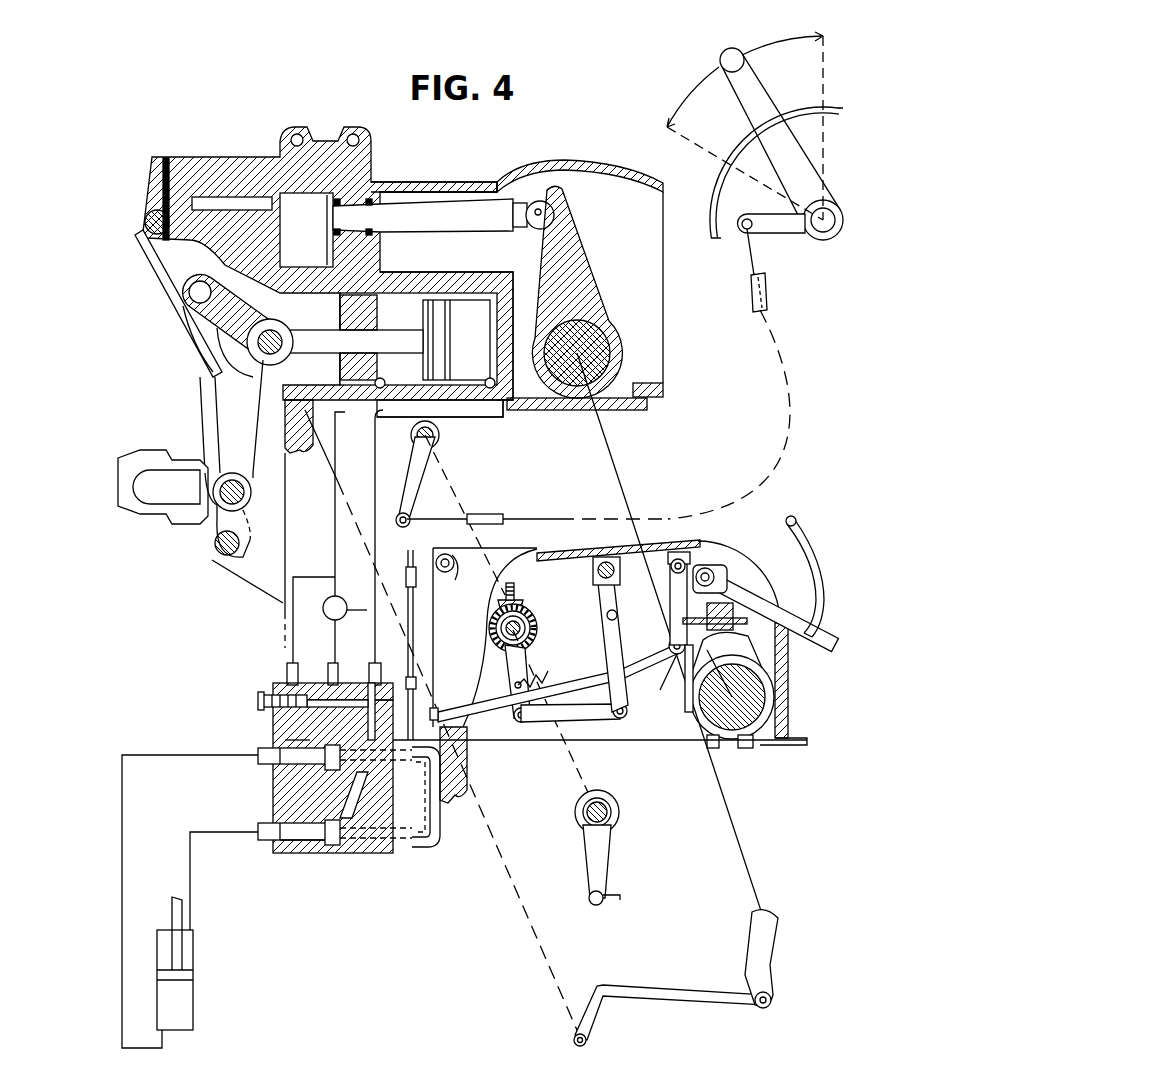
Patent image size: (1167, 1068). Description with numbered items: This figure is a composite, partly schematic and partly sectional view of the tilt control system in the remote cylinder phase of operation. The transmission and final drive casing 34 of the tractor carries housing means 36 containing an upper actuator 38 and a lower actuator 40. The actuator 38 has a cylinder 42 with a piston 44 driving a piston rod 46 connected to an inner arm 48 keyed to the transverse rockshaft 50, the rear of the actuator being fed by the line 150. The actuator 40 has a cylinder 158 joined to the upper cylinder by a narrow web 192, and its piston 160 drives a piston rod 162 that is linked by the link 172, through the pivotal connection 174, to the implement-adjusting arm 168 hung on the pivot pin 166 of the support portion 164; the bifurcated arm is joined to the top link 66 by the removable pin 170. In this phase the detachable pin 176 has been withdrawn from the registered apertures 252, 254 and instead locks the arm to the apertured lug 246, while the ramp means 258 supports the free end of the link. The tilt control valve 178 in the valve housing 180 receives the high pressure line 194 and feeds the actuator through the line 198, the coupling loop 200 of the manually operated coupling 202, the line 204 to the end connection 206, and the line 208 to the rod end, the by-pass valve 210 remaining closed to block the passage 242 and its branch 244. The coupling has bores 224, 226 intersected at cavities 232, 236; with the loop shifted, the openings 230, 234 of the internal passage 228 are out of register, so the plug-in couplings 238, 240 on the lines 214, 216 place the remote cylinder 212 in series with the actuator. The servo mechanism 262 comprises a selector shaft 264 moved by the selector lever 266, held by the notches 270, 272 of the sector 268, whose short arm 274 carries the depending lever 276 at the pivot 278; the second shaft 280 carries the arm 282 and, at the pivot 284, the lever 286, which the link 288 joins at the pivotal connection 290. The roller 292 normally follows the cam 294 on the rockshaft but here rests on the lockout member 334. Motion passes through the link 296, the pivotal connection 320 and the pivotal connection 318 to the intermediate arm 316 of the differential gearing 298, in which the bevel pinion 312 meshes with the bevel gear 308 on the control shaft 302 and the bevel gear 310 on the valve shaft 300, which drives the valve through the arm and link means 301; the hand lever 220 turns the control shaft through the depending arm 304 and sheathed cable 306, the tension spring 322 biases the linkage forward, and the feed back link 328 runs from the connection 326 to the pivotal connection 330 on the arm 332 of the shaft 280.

The transmission and final drive casing 34 is at (663, 391).
The housing means 36 is at (643, 181).
The first power-operated fluid-pressure actuator 38 is at (503, 261).
The second power-operated fluid-pressure actuator 40 is at (470, 392).
The cylinder 42 is at (428, 182).
The piston 44 is at (345, 228).
The piston rod 46 is at (460, 236).
The inner arm 48 is at (585, 260).
The rockshaft 50 is at (592, 340).
The top link 66 is at (125, 472).
The line 150 is at (195, 170).
The cylinder 158 is at (397, 388).
The piston 160 is at (453, 342).
The piston rod 162 is at (325, 332).
The support portion 164 is at (160, 162).
The transverse pivot pin 166 is at (150, 221).
The implement-adjusting arm 168 is at (132, 259).
The removable transverse pin 170 is at (225, 501).
The link 172 is at (205, 324).
The pivotal connection 174 is at (285, 354).
The detachable pivotal connection 176 is at (225, 552).
The tilt control valve 178 is at (325, 601).
The valve housing 180 is at (788, 708).
The web 192 is at (500, 294).
The high pressure line 194 is at (355, 606).
The line 198 is at (330, 634).
The coupling loop 200 is at (432, 851).
The manually operated coupling 202 is at (273, 792).
The line 204 is at (375, 630).
The actuator end connection 206 is at (480, 416).
The line 208 is at (333, 535).
The by-pass valve 210 is at (262, 701).
The remote cylinder 212 is at (194, 1011).
The line 214 is at (122, 907).
The line 216 is at (185, 907).
The hand lever 220 is at (730, 53).
The bore 224 is at (295, 741).
The bore 226 is at (293, 843).
The internal passage 228 is at (440, 826).
The opening 230 is at (332, 791).
The intersection 232 is at (325, 771).
The opening 234 is at (352, 843).
The intersection 236 is at (336, 849).
The plug-in tubular coupling 238 is at (258, 752).
The plug-in tubular coupling 240 is at (262, 839).
The passage 242 is at (352, 683).
The branch 244 is at (291, 657).
The apertured lug 246 is at (260, 580).
The aperture 252 is at (192, 293).
The aperture 254 is at (220, 344).
The ramp means 258 is at (205, 321).
The servo mechanism 262 is at (562, 563).
The selector shaft 264 is at (716, 572).
The selector lever 266 is at (822, 632).
The sector 268 is at (791, 518).
The notch 270 is at (803, 530).
The notch 272 is at (800, 618).
The short arm 274 is at (700, 567).
The depending lever 276 is at (670, 584).
The pivot 278 is at (680, 556).
The second shaft 280 is at (611, 555).
The arm 282 is at (600, 600).
The pivot 284 is at (607, 616).
The lever 286 is at (608, 633).
The link 288 is at (657, 658).
The pivotal connection 290 is at (615, 672).
The roller 292 is at (672, 655).
The cam 294 is at (683, 706).
The link 296 is at (545, 722).
The differential gearing 298 is at (517, 573).
The valve shaft 300 is at (620, 813).
The arm and link means 301 is at (606, 862).
The control shaft 302 is at (437, 441).
The depending arm 304 is at (427, 476).
The sheathed cable 306 is at (515, 517).
The bevel gear 308 is at (505, 640).
The bevel gear 310 is at (575, 813).
The bevel pinion 312 is at (503, 601).
The intermediate arm 316 is at (505, 660).
The pivotal connection 318 is at (517, 722).
The pivotal connection 320 is at (620, 720).
The tension spring 322 is at (546, 680).
The pivotal connection 326 is at (578, 1044).
The feed back link 328 is at (665, 992).
The pivotal connection 330 is at (772, 1000).
The arm 332 is at (768, 961).
The lockout member 334 is at (780, 661).